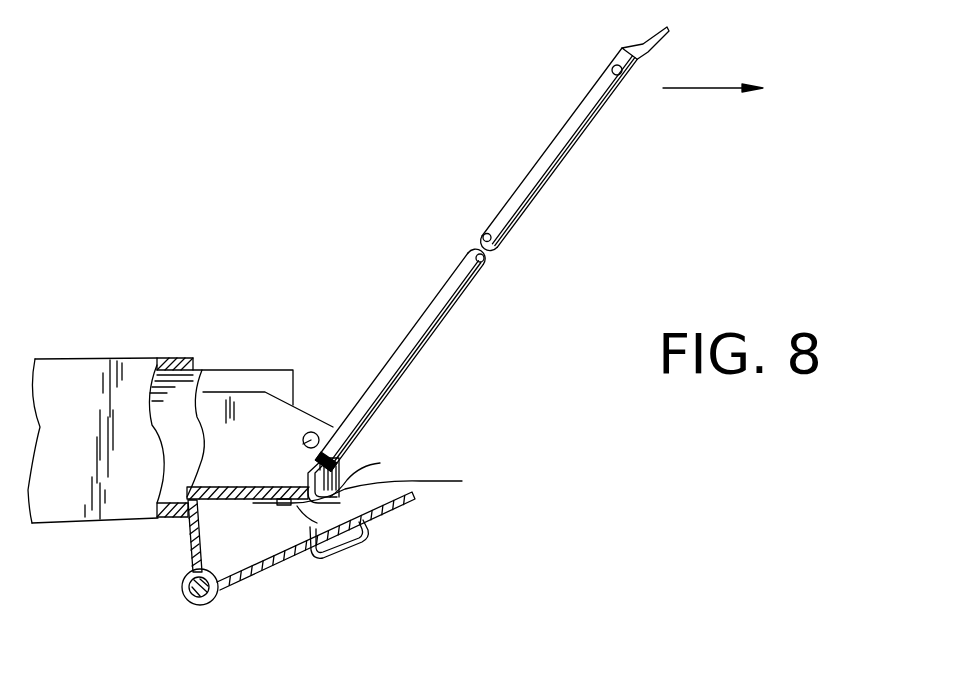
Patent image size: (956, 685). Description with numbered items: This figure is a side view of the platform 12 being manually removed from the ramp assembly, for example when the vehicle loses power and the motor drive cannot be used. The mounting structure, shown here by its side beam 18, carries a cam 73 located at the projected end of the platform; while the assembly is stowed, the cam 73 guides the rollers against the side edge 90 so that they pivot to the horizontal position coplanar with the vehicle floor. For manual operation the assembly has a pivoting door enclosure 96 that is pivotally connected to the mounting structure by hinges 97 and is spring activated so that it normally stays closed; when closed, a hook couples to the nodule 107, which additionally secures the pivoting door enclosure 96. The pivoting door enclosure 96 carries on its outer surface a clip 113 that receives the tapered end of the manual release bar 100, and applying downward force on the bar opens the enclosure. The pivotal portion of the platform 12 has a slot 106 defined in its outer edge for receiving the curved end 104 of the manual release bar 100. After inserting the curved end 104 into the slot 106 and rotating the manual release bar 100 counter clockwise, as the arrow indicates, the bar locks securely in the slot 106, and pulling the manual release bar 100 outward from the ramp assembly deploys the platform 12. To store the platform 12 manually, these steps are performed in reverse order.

The platform 12 is at (274, 347).
The side beam 18 is at (63, 495).
The cam 73 is at (237, 382).
The side edge 90 is at (168, 393).
The pivoting door enclosure 96 is at (257, 498).
The hinge 97 is at (203, 606).
The manual release bar 100 is at (512, 207).
The curved end 104 is at (278, 487).
The slot 106 is at (380, 463).
The nodule 107 is at (318, 426).
The clip 113 is at (368, 543).